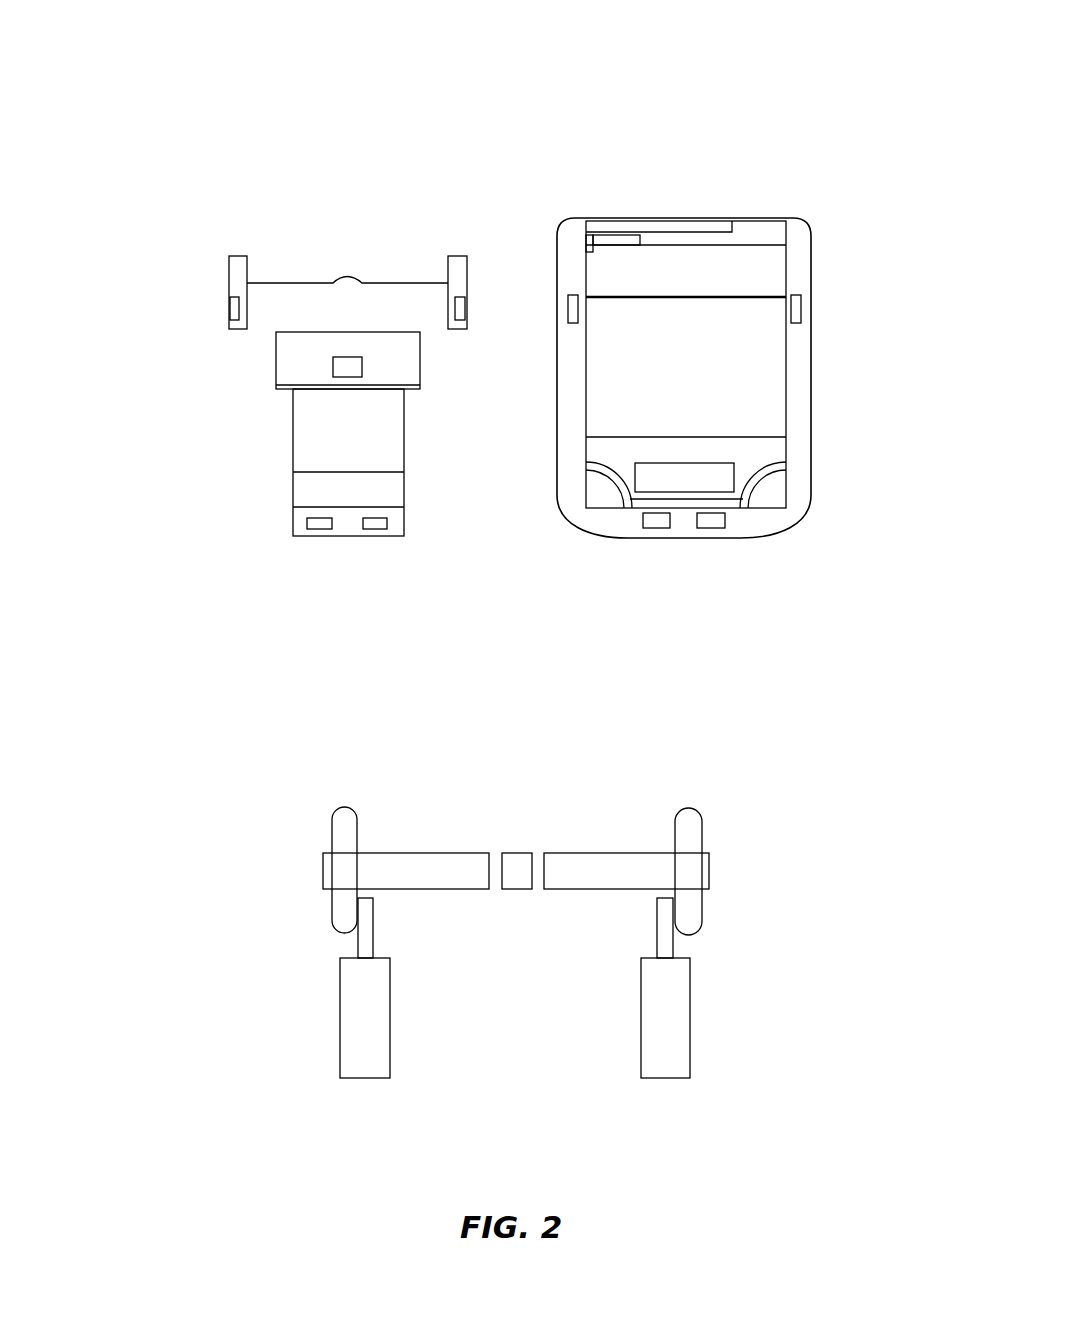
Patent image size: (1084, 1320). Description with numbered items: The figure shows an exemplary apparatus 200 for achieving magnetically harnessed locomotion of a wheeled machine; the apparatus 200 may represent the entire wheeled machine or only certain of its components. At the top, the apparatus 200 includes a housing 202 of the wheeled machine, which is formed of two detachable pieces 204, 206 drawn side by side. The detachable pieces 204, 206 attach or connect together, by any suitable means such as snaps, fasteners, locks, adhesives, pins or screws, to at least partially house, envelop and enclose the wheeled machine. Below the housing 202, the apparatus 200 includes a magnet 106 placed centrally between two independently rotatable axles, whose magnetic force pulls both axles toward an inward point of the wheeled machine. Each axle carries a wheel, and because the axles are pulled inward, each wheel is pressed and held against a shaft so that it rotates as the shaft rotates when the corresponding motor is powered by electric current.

The apparatus 200 is at (176, 101).
The housing 202 is at (803, 205).
The detachable piece 204 is at (302, 537).
The detachable piece 206 is at (745, 538).
The magnet 106 is at (510, 853).